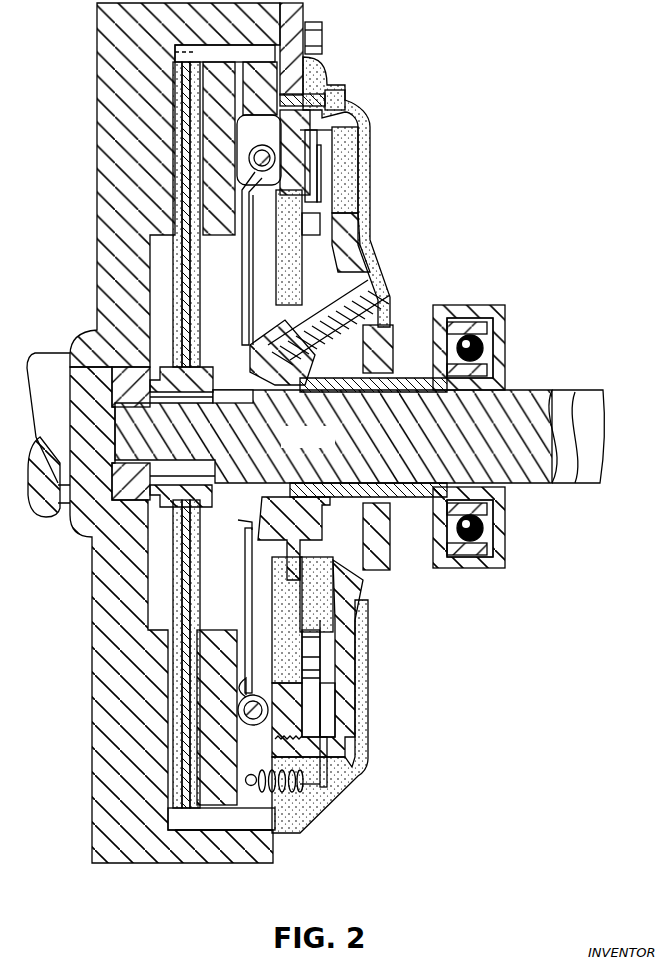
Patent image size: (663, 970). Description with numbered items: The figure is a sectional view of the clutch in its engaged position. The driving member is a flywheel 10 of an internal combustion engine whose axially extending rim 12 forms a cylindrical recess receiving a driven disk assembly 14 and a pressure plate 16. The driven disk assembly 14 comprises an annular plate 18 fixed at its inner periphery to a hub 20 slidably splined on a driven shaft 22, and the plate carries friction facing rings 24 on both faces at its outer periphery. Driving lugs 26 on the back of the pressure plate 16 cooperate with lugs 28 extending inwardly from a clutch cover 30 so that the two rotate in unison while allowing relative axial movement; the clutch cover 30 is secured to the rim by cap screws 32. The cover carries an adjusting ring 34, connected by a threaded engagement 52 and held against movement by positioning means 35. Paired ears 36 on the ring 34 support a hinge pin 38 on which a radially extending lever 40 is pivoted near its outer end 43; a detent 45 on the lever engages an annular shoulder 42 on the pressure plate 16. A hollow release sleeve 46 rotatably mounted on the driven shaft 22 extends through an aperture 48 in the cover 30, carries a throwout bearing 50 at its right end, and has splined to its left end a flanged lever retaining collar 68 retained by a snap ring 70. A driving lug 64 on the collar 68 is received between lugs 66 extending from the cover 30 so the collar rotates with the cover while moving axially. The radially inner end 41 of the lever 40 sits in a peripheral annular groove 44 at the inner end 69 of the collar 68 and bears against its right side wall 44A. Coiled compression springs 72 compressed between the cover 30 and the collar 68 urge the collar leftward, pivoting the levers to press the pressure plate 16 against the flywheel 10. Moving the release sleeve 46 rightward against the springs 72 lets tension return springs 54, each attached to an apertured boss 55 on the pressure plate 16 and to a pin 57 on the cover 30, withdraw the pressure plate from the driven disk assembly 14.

The flywheel 10 is at (120, 866).
The rim 12 is at (232, 840).
The driven disk assembly 14 is at (176, 290).
The pressure plate 16 is at (225, 54).
The annular plate 18 is at (182, 335).
The hub 20 is at (175, 365).
The driven shaft 22 is at (359, 436).
The friction facing rings 24 is at (150, 640).
The driving lugs 26 is at (259, 150).
The lugs 28 is at (264, 72).
The clutch cover 30 is at (350, 648).
The cap screws 32 is at (322, 30).
The adjusting ring 34 is at (319, 710).
The positioning means 35 is at (330, 125).
The ears 36 is at (297, 678).
The hinge pin 38 is at (323, 207).
The lever 40 is at (242, 282).
The radially inner end 41 is at (246, 332).
The annular shoulder 42 is at (217, 709).
The outer end 43 is at (240, 736).
The peripheral annular groove 44 is at (276, 535).
The right side wall 44A is at (253, 545).
The detent 45 is at (306, 182).
The release sleeve 46 is at (390, 380).
The aperture 48 is at (392, 497).
The throwout bearing 50 is at (508, 343).
The threaded engagement 52 is at (298, 745).
The tension return springs 54 is at (277, 796).
The apertured boss 55 is at (222, 796).
The pin 57 is at (330, 768).
The driving lug 64 is at (325, 575).
The lugs 66 is at (350, 580).
The lever retaining collar 68 is at (364, 352).
The inner end 69 is at (238, 530).
The snap ring 70 is at (295, 352).
The coiled compression springs 72 is at (329, 308).